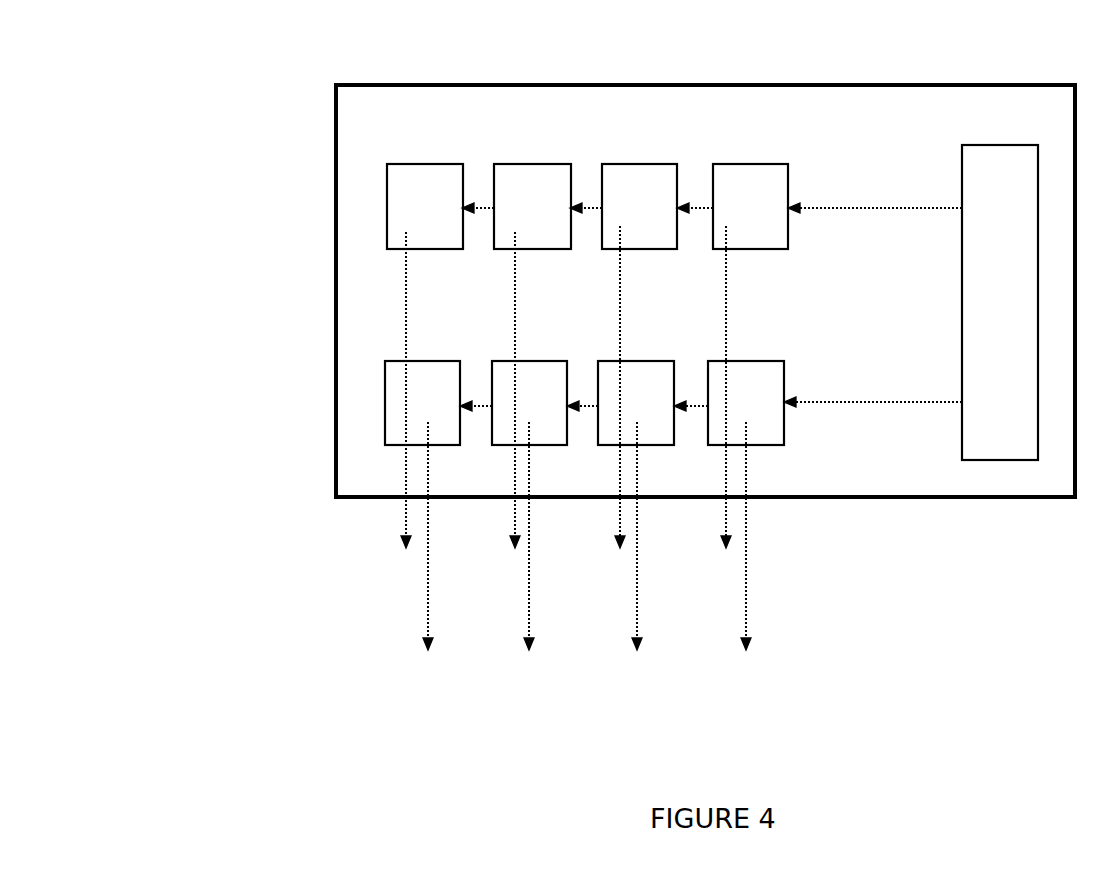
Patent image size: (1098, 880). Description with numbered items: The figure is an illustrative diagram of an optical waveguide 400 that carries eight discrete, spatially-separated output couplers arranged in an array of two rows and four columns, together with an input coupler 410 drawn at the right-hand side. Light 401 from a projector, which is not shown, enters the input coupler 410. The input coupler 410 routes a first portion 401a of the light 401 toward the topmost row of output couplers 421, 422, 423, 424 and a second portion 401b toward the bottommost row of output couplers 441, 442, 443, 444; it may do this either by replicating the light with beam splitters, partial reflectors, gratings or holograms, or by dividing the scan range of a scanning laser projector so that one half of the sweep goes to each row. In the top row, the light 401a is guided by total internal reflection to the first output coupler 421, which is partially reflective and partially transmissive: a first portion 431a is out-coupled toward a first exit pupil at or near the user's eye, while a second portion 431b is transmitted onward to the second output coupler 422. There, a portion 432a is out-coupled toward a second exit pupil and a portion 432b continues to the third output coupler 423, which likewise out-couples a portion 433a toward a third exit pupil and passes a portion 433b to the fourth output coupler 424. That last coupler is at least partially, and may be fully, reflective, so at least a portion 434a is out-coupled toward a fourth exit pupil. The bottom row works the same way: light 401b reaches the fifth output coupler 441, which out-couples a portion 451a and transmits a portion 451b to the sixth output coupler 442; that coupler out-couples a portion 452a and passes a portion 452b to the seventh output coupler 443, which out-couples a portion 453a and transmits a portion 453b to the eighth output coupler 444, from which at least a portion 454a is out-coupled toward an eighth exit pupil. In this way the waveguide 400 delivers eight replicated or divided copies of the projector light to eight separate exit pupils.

The optical waveguide 400 is at (216, 109).
The light 401 is at (1002, 450).
The first portion of light 401a is at (875, 198).
The second portion of light 401b is at (873, 392).
The input coupler 410 is at (1000, 302).
The first output coupler 421 is at (750, 206).
The second output coupler 422 is at (639, 206).
The third output coupler 423 is at (532, 206).
The fourth output coupler 424 is at (425, 206).
The first portion of light 401a 431a is at (702, 396).
The second portion of light 401a 431b is at (700, 207).
The first portion of light 431b 432a is at (597, 396).
The second portion of light 431b 432b is at (593, 207).
The first portion of light 432b 433a is at (488, 399).
The second portion of light 432b 433b is at (483, 207).
The first portion of light 433b 434a is at (379, 399).
The fifth output coupler 441 is at (746, 403).
The sixth output coupler 442 is at (636, 403).
The seventh output coupler 443 is at (529, 403).
The eighth output coupler 444 is at (422, 403).
The first portion of light 401b 451a is at (750, 551).
The second portion of light 401b 451b is at (700, 405).
The first portion of light 451b 452a is at (640, 551).
The second portion of light 451b 452b is at (593, 405).
The first portion of light 452b 453a is at (524, 551).
The second portion of light 452b 453b is at (482, 405).
The first portion of light 453b 454a is at (425, 551).